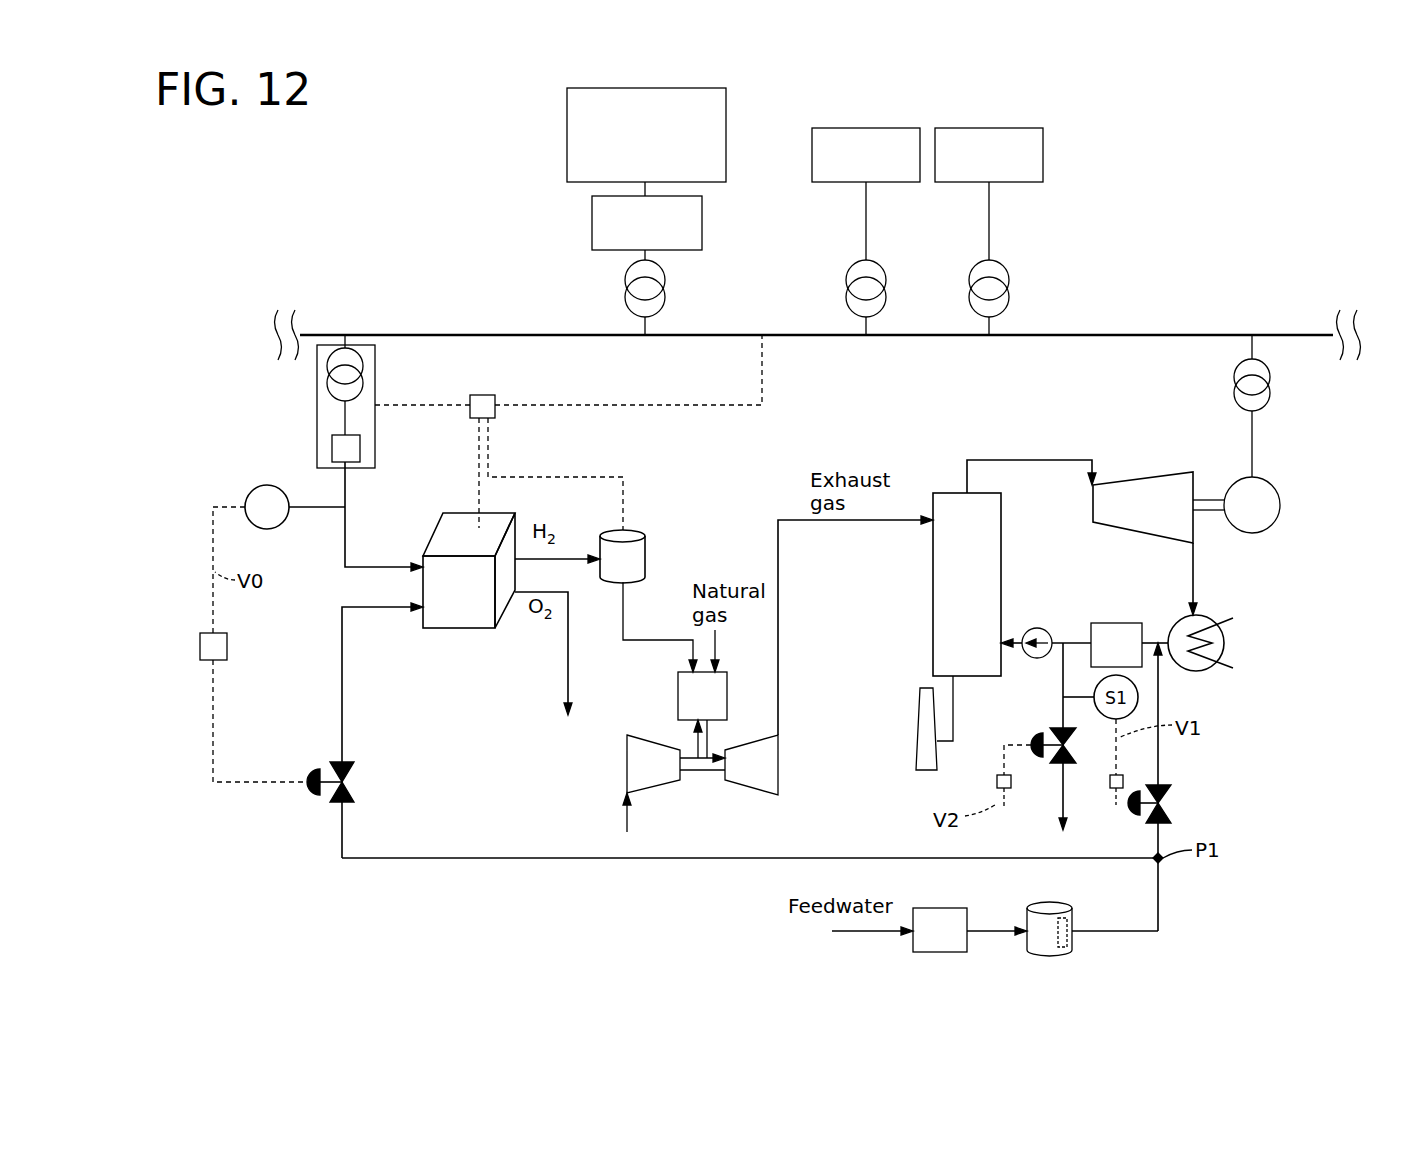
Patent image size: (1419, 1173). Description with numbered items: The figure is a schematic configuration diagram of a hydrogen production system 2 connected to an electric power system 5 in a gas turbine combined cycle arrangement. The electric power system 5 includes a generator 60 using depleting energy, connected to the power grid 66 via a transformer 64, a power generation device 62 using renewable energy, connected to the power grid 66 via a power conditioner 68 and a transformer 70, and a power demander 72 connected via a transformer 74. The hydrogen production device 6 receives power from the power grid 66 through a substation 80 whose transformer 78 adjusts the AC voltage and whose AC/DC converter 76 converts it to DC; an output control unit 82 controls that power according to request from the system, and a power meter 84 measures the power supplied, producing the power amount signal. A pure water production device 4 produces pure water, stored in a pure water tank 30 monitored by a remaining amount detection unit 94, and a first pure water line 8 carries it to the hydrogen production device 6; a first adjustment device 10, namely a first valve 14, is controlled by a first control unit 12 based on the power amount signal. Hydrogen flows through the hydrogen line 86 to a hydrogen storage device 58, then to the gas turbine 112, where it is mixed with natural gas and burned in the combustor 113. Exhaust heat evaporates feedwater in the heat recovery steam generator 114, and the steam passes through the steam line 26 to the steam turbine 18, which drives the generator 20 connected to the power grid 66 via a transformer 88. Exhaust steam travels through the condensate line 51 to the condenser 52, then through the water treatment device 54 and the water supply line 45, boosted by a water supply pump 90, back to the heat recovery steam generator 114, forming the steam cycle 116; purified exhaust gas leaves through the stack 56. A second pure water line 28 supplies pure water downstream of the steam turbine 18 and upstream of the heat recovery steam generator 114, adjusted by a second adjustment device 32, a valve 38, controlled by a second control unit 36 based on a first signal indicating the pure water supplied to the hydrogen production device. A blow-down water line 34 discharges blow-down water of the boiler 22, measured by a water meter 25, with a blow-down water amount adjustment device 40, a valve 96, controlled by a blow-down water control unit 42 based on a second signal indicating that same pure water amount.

The hydrogen production system 2 is at (198, 422).
The pure water production device 4 is at (945, 907).
The electric power system 5 is at (198, 305).
The hydrogen production device 6 is at (450, 630).
The first pure water line 8 is at (505, 860).
The first adjustment device 10 is at (381, 775).
The first control unit 12 is at (228, 645).
The first valve 14 is at (352, 765).
The steam turbine 18 is at (1143, 478).
The generator 20 is at (1268, 482).
The boiler 22 is at (1050, 575).
The water meter 25 is at (1068, 746).
The steam line 26 is at (1080, 458).
The second pure water line 28 is at (1162, 710).
The pure water tank 30 is at (1045, 903).
The second adjustment device 32 is at (1198, 799).
The blow-down water line 34 is at (1063, 666).
The second control unit 36 is at (1116, 805).
The valve 38 is at (1170, 795).
The blow-down water amount adjustment device 40 is at (1004, 738).
The blow-down water control unit 42 is at (997, 783).
The water supply line 45 is at (1055, 640).
The condensate line 51 is at (1196, 566).
The condenser 52 is at (1218, 620).
The water treatment device 54 is at (1125, 622).
The stack 56 is at (918, 748).
The hydrogen storage device 58 is at (640, 528).
The generator 60 is at (855, 127).
The power generation device 62 is at (567, 144).
The transformer 64 is at (886, 278).
The power grid 66 is at (434, 333).
The power conditioner 68 is at (702, 243).
The transformer 70 is at (665, 300).
The power demander 72 is at (970, 127).
The transformer 74 is at (1009, 278).
The AC/DC converter 76 is at (361, 455).
The transformer 78 is at (363, 362).
The substation 80 is at (373, 401).
The output control unit 82 is at (486, 394).
The power meter 84 is at (267, 485).
The hydrogen line 86 is at (625, 612).
The transformer 88 is at (1233, 375).
The water supply pump 90 is at (1033, 630).
The remaining amount detection unit 94 is at (1065, 948).
The valve 96 is at (1050, 730).
The gas turbine 112 is at (719, 805).
The combustor 113 is at (678, 712).
The heat recovery steam generator 114 is at (1003, 553).
The steam cycle 116 is at (928, 432).